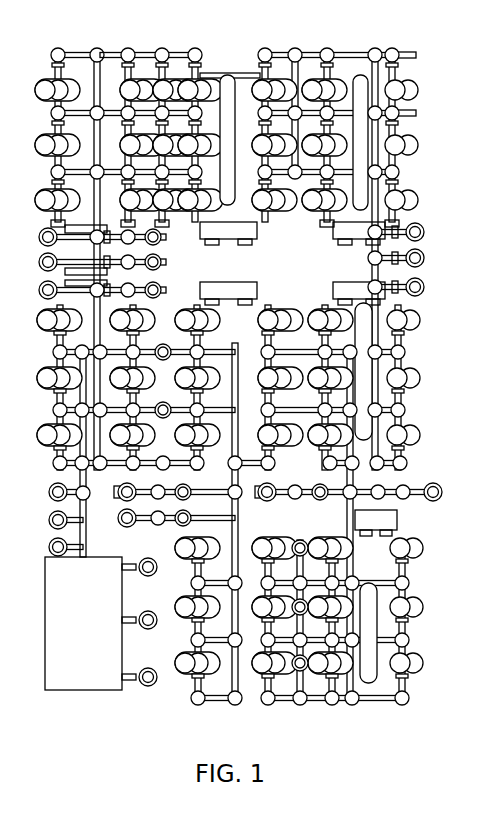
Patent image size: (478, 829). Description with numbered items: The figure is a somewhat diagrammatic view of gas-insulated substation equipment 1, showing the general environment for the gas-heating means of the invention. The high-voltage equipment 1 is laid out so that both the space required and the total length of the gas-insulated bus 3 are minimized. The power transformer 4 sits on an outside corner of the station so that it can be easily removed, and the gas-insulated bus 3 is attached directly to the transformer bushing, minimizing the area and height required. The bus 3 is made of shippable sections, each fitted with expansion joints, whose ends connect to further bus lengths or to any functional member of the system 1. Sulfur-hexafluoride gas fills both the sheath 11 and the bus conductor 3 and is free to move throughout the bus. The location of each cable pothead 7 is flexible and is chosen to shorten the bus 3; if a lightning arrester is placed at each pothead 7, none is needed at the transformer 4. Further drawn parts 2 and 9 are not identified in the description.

The gas-insulated substation equipment 1 is at (306, 267).
The conductor line 2 is at (143, 52).
The gas-insulated bus 3 is at (345, 52).
The power transformer 4 is at (92, 637).
The pothead 7 is at (298, 553).
The terminal 9 is at (147, 575).
The sheath 11 is at (43, 251).